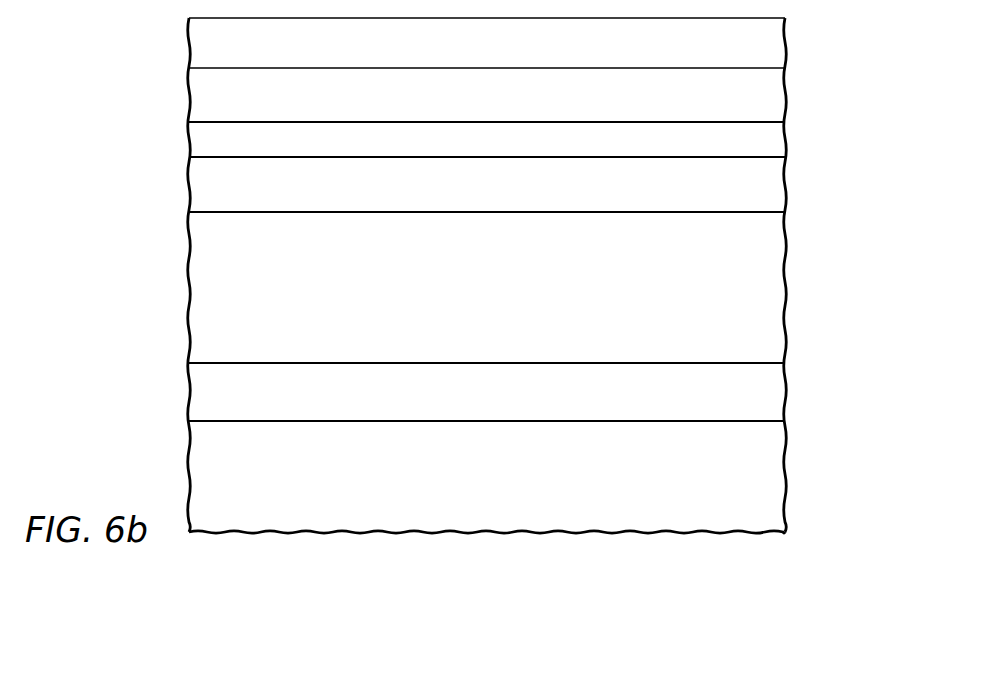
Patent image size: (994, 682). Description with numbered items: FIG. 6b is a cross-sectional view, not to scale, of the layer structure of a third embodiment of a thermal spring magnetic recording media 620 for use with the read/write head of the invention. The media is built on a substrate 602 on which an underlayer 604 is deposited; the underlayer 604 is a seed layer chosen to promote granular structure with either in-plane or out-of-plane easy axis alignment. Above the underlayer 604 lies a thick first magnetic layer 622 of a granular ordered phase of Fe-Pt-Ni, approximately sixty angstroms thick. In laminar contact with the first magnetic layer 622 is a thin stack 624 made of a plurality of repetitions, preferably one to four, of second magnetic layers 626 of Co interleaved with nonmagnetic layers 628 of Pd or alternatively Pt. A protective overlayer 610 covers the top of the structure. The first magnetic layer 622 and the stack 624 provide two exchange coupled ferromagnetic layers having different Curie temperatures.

The substrate 602 is at (787, 465).
The underlayer 604 is at (787, 393).
The protective overlayer 610 is at (787, 44).
The thermal spring magnetic recording media 620 is at (797, 545).
The first magnetic layer 622 is at (787, 283).
The stack 624 is at (163, 70).
The second magnetic layers 626 is at (787, 96).
The nonmagnetic layers 628 is at (787, 141).